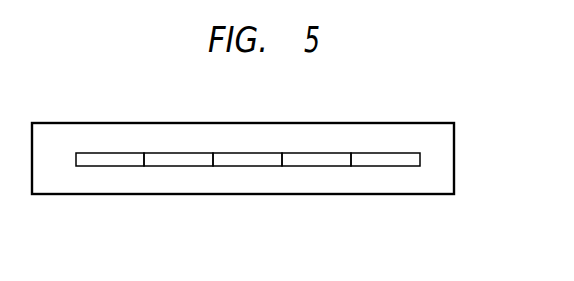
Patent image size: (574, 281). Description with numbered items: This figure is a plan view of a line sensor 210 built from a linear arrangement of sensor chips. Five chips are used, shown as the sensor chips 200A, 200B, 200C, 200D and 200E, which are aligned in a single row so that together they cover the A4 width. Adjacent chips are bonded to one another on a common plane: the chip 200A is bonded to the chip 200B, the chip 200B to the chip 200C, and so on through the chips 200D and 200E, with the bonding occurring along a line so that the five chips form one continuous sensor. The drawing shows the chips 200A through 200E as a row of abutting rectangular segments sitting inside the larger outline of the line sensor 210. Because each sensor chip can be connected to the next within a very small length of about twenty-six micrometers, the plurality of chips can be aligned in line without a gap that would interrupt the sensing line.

The line sensor 210 is at (415, 189).
The sensor chip 200A is at (127, 159).
The sensor chip 200B is at (195, 155).
The sensor chip 200C is at (263, 159).
The sensor chip 200D is at (329, 159).
The sensor chip 200E is at (397, 159).